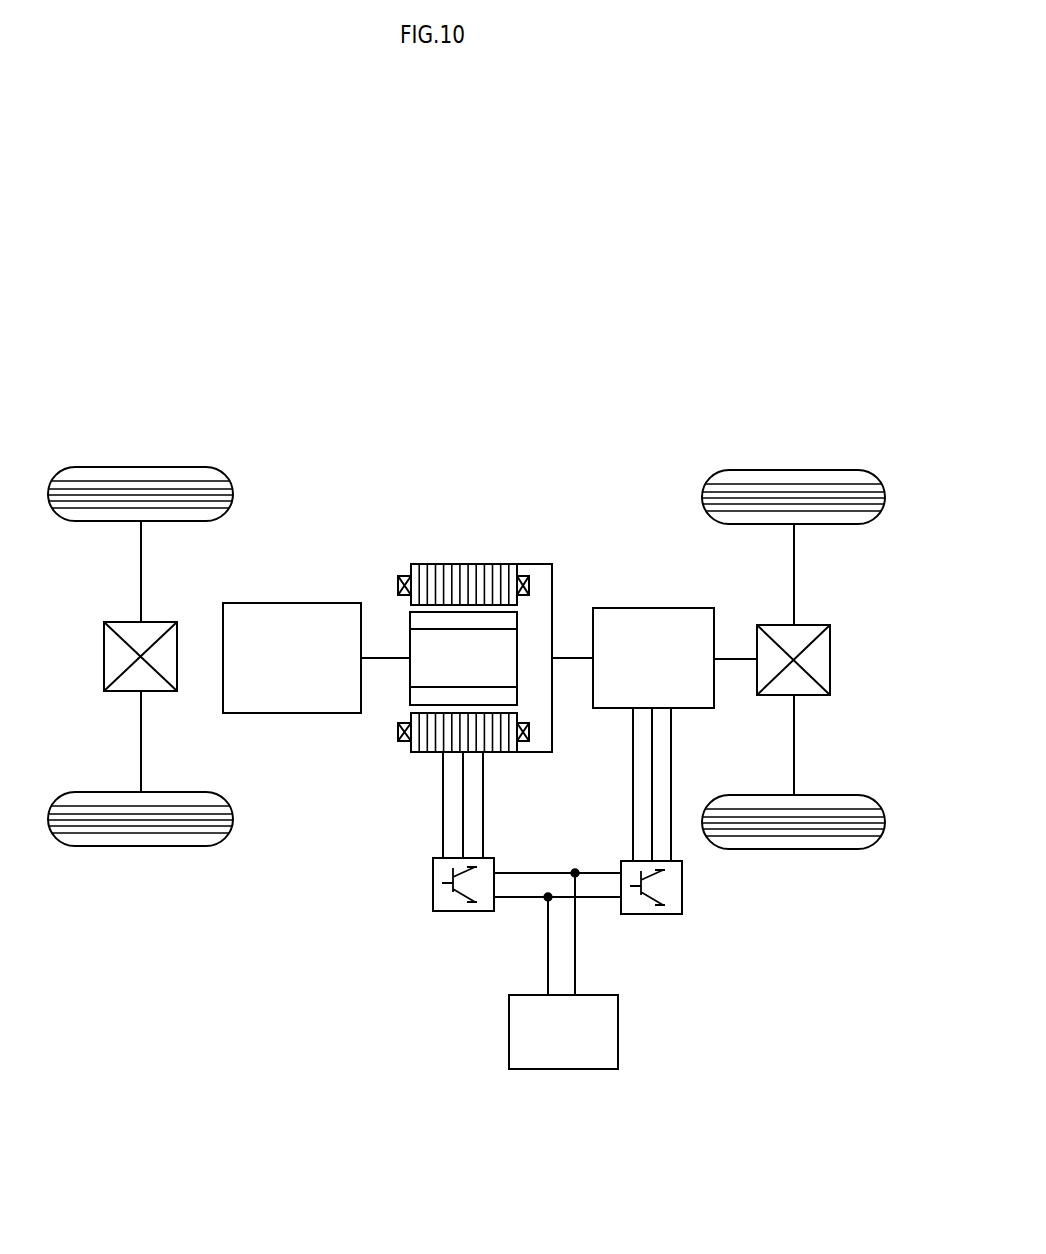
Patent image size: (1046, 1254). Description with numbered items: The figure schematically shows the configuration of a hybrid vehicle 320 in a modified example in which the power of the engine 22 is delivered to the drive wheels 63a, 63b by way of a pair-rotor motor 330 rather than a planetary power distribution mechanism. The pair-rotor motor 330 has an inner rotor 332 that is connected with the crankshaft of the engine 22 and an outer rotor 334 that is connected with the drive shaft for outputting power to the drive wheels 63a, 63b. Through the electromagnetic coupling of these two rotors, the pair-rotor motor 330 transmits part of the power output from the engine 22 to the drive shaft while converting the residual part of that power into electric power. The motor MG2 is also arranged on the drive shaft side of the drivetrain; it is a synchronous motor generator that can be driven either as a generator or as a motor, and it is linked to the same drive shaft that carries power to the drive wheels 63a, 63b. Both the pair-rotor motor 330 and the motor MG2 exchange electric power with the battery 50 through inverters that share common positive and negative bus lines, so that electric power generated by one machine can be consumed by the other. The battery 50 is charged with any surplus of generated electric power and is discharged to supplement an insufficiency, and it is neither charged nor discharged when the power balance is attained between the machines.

The hybrid vehicle 320 is at (514, 336).
The pair-rotor motor 330 is at (470, 418).
The inner rotor 332 is at (408, 638).
The outer rotor 334 is at (465, 565).
The engine 22 is at (292, 713).
The motor MG2 is at (653, 608).
The drive wheel 63a is at (794, 470).
The drive wheel 63b is at (793, 849).
The battery 50 is at (618, 1028).